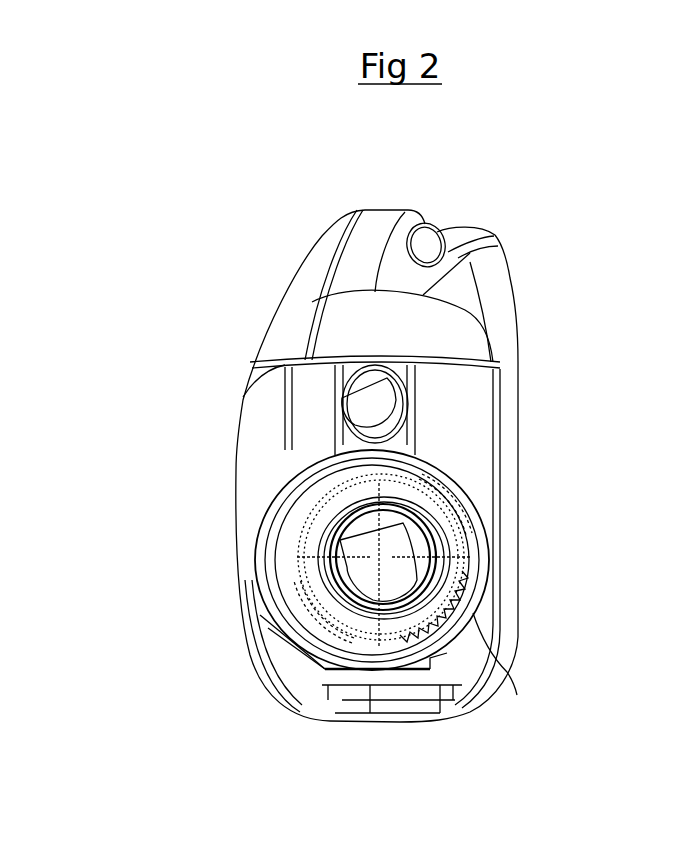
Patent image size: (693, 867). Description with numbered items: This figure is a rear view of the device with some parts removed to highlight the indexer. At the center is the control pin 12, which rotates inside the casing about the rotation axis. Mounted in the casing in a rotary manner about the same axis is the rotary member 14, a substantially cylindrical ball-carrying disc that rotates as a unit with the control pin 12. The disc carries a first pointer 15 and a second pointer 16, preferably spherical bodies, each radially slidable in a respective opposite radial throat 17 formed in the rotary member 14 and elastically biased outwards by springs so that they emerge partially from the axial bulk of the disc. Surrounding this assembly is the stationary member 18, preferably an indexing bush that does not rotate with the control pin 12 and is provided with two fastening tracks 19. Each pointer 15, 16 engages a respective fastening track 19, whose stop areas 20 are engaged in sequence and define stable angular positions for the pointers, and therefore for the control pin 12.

The control pin 12 is at (363, 540).
The rotary member 14 is at (370, 653).
The first pointer 15 is at (473, 523).
The second pointer 16 is at (263, 565).
The radial throat 17 is at (503, 650).
The stationary member 18 is at (288, 628).
The fastening track 19 is at (433, 717).
The stop area 20 is at (420, 452).